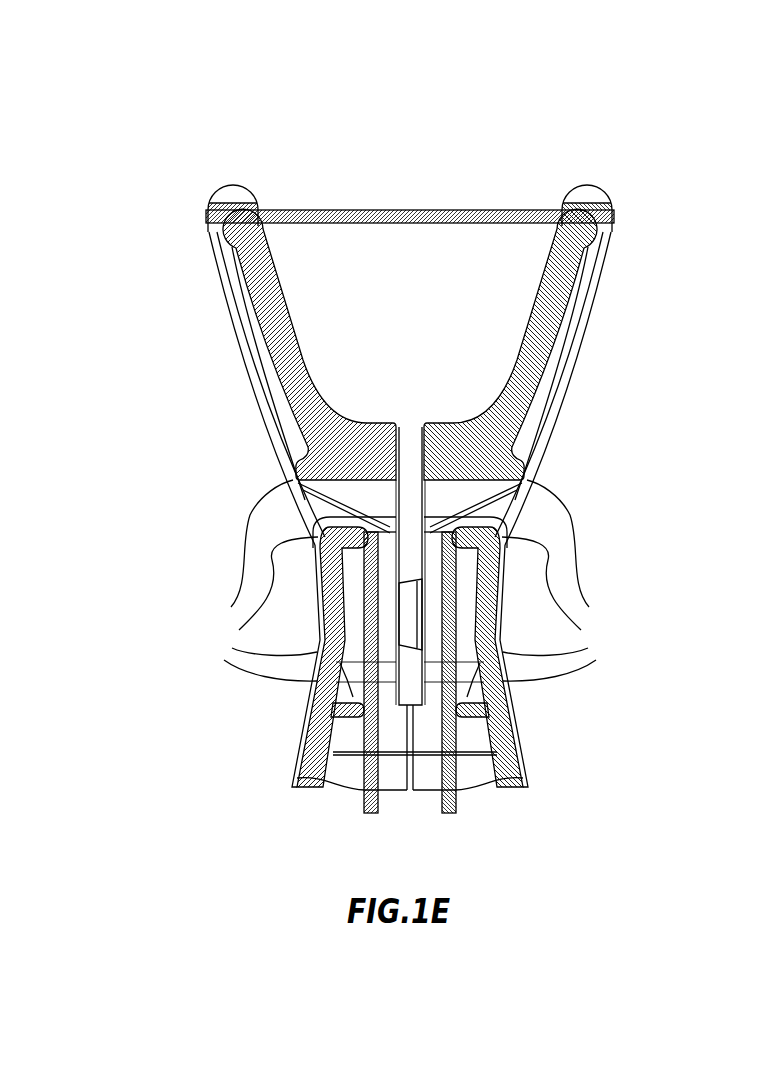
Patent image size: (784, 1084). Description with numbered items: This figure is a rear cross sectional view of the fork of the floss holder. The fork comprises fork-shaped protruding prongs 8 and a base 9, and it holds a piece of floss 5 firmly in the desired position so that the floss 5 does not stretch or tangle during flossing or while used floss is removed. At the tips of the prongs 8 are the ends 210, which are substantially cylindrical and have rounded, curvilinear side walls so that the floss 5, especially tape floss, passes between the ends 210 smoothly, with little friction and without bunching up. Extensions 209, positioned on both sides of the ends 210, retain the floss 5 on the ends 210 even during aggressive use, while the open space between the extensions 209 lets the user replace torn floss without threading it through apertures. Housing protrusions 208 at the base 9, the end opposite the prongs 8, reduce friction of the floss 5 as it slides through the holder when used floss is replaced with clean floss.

The floss 5 is at (411, 210).
The fork prongs 8 is at (280, 306).
The base 9 is at (433, 432).
The housing protrusions 208 is at (410, 646).
The extensions 209 is at (232, 190).
The ends 210 is at (235, 235).